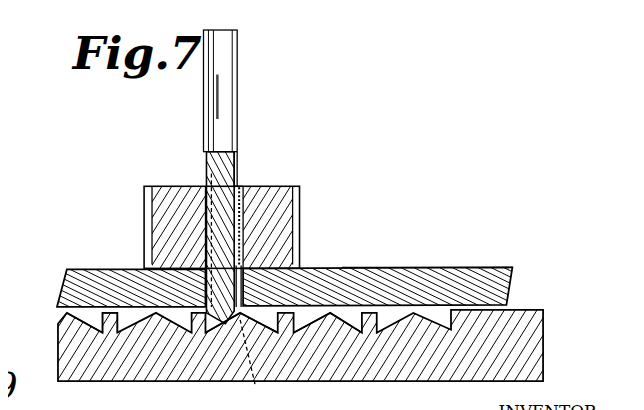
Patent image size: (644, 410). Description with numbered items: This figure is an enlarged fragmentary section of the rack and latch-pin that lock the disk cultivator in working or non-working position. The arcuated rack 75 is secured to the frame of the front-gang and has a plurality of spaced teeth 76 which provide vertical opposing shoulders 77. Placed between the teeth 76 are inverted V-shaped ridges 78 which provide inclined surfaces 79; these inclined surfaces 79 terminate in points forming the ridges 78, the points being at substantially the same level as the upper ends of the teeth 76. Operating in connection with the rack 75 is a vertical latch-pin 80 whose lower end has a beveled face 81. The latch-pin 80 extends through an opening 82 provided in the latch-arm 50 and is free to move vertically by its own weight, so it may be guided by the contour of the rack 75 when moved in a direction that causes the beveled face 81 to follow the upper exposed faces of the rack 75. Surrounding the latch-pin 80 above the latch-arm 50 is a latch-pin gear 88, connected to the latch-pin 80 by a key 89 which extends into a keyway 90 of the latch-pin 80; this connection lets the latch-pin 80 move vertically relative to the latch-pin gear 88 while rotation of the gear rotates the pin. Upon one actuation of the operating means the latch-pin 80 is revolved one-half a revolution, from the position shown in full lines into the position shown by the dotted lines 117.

The latch-arm 50 is at (87, 274).
The arcuated rack 75 is at (433, 372).
The teeth 76 is at (97, 318).
The vertical opposing shoulders 77 is at (92, 321).
The inverted V-shaped ridges 78 is at (327, 350).
The inclined surfaces 79 is at (344, 302).
The latch-pin 80 is at (214, 95).
The beveled face 81 is at (220, 325).
The opening 82 is at (236, 311).
The latch-pin gear 88 is at (278, 189).
The key 89 is at (240, 183).
The keyway 90 is at (232, 167).
The dotted lines 117 is at (251, 381).